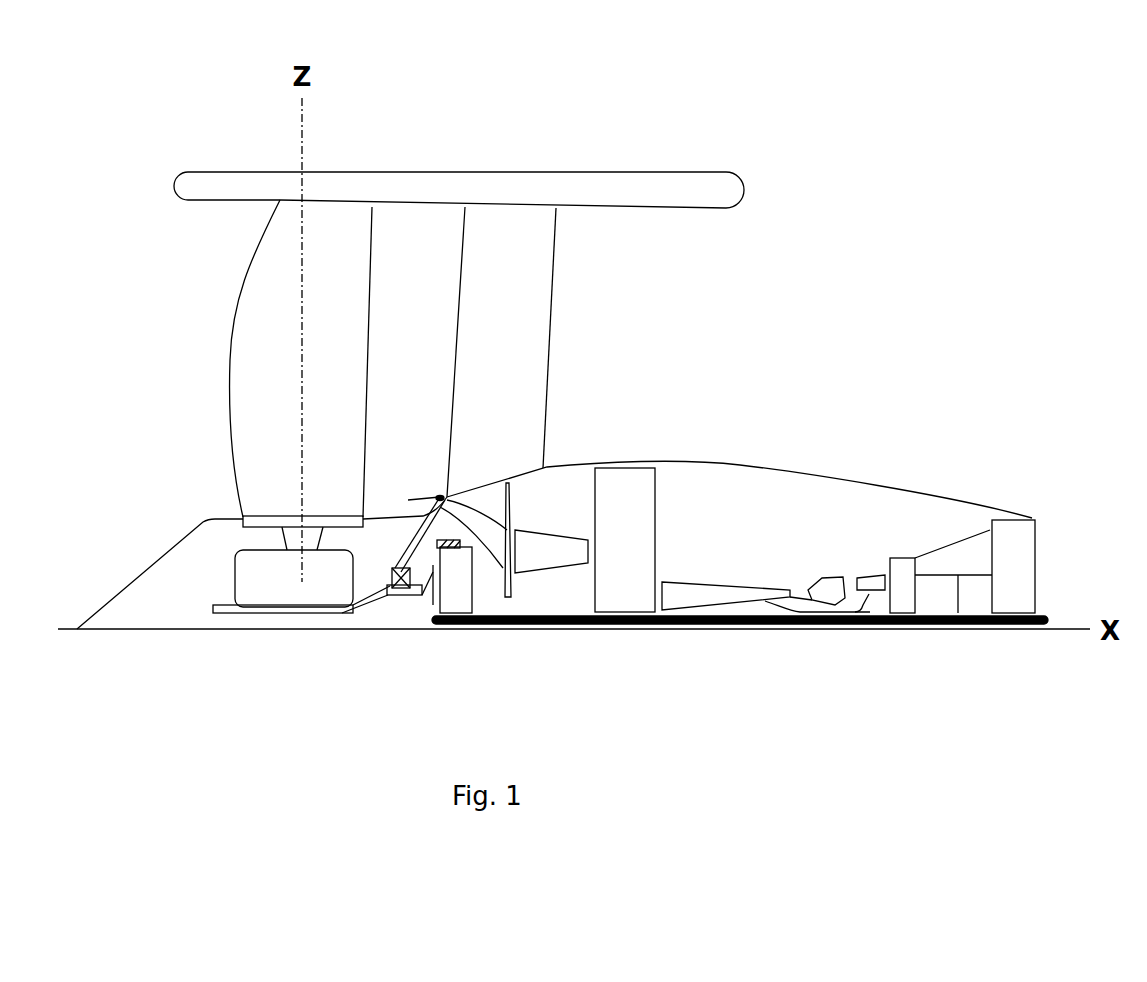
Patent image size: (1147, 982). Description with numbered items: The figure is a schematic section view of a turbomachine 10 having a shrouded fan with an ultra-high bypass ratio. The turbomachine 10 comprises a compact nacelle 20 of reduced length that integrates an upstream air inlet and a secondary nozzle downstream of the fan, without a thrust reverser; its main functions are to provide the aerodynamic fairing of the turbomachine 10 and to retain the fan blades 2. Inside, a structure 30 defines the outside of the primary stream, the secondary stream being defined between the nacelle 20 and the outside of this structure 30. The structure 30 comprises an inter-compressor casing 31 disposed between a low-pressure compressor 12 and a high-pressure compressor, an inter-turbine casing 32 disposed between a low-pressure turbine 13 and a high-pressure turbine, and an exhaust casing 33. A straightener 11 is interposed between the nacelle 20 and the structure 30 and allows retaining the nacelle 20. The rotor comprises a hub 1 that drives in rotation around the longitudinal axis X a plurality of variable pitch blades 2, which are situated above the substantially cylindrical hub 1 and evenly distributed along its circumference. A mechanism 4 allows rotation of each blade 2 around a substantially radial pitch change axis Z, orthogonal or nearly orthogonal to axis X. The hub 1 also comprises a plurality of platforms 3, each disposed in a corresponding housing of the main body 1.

The hub 1 is at (208, 521).
The variable pitch blade 2 is at (266, 273).
The platform 3 is at (283, 523).
The mechanism 4 is at (307, 593).
The turbomachine 10 is at (138, 709).
The straightener 11 is at (459, 362).
The low-pressure compressor 12 is at (572, 616).
The low-pressure turbine 13 is at (953, 571).
The nacelle 20 is at (638, 186).
The structure 30 is at (440, 497).
The inter-compressor casing 31 is at (625, 540).
The inter-turbine casing 32 is at (905, 583).
The exhaust casing 33 is at (1013, 566).